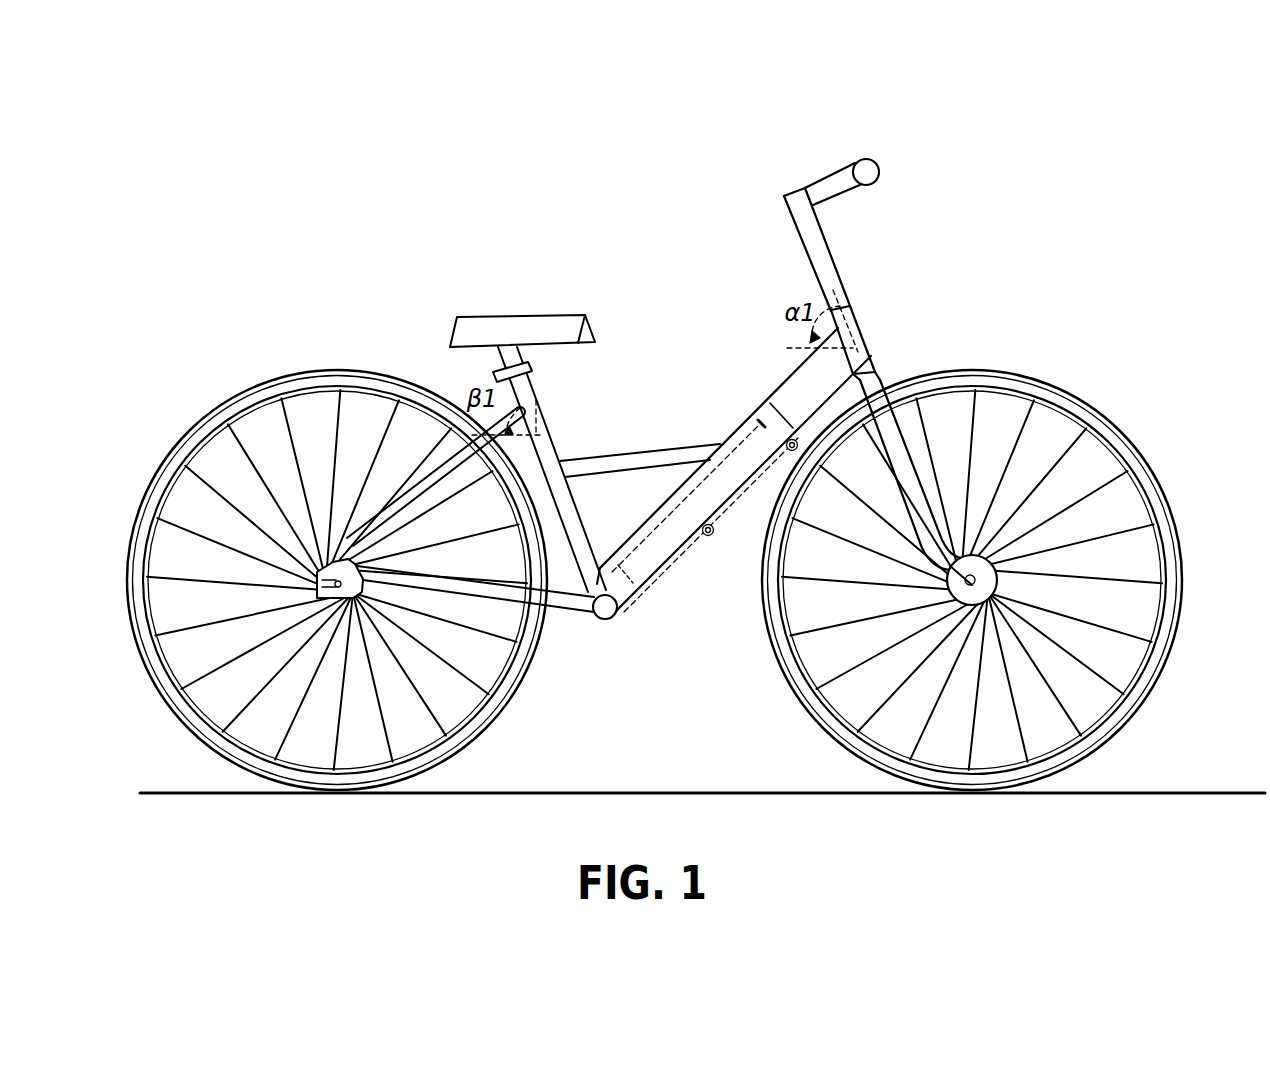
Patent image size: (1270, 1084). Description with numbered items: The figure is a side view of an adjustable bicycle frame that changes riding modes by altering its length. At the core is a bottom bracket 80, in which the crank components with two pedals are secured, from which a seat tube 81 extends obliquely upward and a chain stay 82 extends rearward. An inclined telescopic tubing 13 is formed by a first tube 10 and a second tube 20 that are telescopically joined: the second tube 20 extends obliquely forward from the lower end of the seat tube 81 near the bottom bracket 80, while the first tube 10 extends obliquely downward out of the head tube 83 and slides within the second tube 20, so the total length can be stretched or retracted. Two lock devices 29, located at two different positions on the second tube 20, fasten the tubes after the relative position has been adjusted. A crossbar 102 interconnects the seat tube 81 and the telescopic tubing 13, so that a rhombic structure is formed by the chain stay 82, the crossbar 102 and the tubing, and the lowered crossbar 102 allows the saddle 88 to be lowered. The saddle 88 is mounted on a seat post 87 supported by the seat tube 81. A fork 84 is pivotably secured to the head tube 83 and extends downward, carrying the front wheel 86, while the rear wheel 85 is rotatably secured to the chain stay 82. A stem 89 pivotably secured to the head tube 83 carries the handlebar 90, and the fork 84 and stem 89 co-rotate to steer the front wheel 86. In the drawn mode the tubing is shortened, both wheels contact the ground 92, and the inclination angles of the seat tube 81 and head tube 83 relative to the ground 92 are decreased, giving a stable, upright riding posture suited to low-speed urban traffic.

The first tube 10 is at (734, 490).
The telescopic tubing 13 is at (738, 421).
The second tube 20 is at (626, 605).
The lock devices 29 is at (789, 452).
The bottom bracket 80 is at (607, 621).
The seat tube 81 is at (533, 390).
The chain stay 82 is at (558, 608).
The head tube 83 is at (857, 325).
The fork 84 is at (877, 378).
The rear wheel 85 is at (257, 392).
The front wheel 86 is at (1107, 440).
The seat post 87 is at (497, 365).
The saddle 88 is at (524, 317).
The stem 89 is at (828, 244).
The handlebar 90 is at (867, 158).
The ground 92 is at (1218, 792).
The crossbar 102 is at (613, 456).